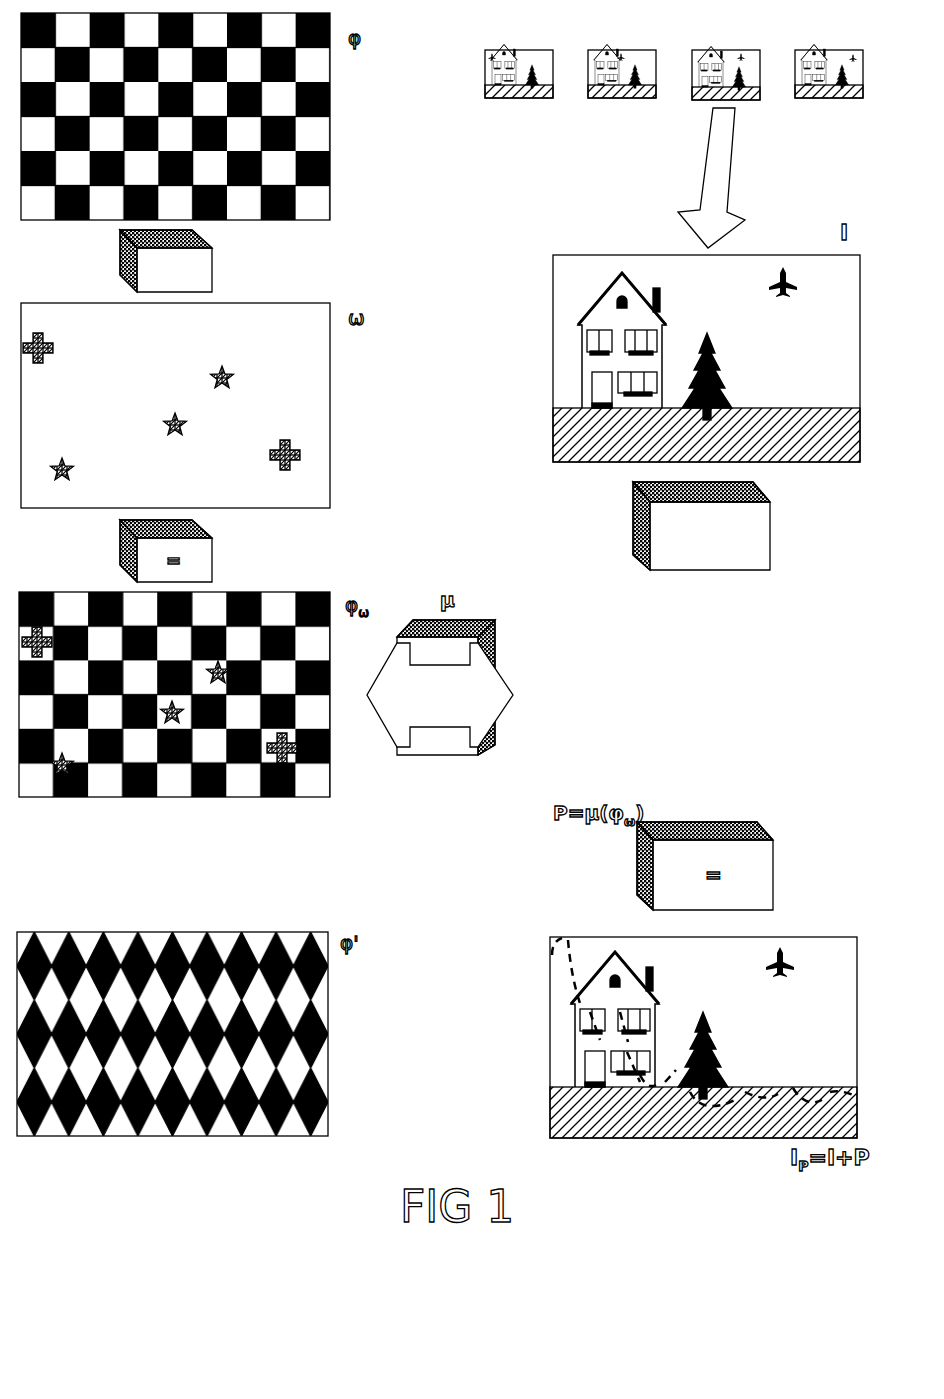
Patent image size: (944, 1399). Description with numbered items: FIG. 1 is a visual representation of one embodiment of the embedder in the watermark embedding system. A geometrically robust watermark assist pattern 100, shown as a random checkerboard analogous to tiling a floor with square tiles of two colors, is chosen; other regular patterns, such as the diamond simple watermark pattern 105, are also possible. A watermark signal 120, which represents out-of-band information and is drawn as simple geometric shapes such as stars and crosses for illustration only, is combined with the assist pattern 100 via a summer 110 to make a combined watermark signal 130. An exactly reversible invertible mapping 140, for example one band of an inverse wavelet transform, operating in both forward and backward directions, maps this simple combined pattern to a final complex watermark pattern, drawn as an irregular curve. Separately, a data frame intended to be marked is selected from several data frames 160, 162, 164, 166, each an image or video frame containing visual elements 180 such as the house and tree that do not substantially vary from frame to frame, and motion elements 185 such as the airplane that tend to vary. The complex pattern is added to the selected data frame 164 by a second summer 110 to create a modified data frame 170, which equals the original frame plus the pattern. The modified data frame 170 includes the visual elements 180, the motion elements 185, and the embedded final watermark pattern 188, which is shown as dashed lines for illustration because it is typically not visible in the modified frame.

The watermark assist pattern 100 is at (330, 153).
The diamond simple watermark pattern 105 is at (205, 1136).
The summer 110 is at (212, 270).
The watermark signal 120 is at (330, 405).
The combined watermark signal 130 is at (240, 797).
The invertible mapping 140 is at (440, 755).
The data frame 160 is at (523, 98).
The data frame 162 is at (622, 98).
The data frame 164 is at (695, 100).
The data frame 166 is at (832, 100).
The modified data frame 170 is at (603, 1138).
The visual elements 180 is at (725, 377).
The motion elements 185 is at (805, 282).
The final watermark pattern 188 is at (767, 1078).